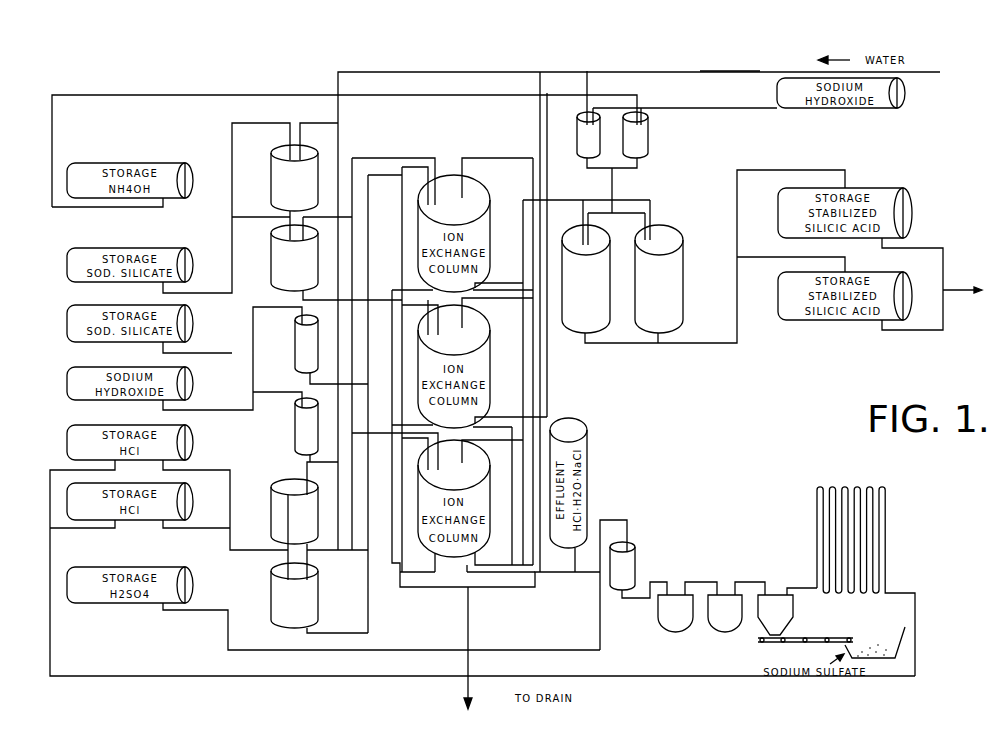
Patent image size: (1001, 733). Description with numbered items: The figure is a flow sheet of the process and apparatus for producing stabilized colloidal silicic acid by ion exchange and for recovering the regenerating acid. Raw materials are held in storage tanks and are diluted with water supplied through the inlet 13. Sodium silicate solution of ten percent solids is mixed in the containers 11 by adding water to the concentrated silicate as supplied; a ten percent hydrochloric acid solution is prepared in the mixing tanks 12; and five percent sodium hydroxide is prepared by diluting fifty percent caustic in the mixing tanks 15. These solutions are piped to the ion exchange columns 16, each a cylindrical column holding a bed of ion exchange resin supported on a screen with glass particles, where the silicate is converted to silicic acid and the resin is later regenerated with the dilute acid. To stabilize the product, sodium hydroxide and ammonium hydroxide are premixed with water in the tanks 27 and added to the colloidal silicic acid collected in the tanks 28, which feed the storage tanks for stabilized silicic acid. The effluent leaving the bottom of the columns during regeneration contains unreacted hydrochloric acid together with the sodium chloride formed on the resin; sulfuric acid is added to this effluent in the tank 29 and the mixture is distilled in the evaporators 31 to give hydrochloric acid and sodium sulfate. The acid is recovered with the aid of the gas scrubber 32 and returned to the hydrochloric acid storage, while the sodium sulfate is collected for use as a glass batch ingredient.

The containers 11 is at (276, 173).
The mixing tanks 12 is at (276, 495).
The inlet 13 is at (730, 70).
The mixing tanks 15 is at (296, 341).
The ion exchange column 16 is at (482, 231).
The tanks 27 is at (588, 142).
The tanks 28 is at (652, 318).
The tank 29 is at (640, 562).
The evaporators 31 is at (712, 607).
The gas scrubber 32 is at (875, 536).